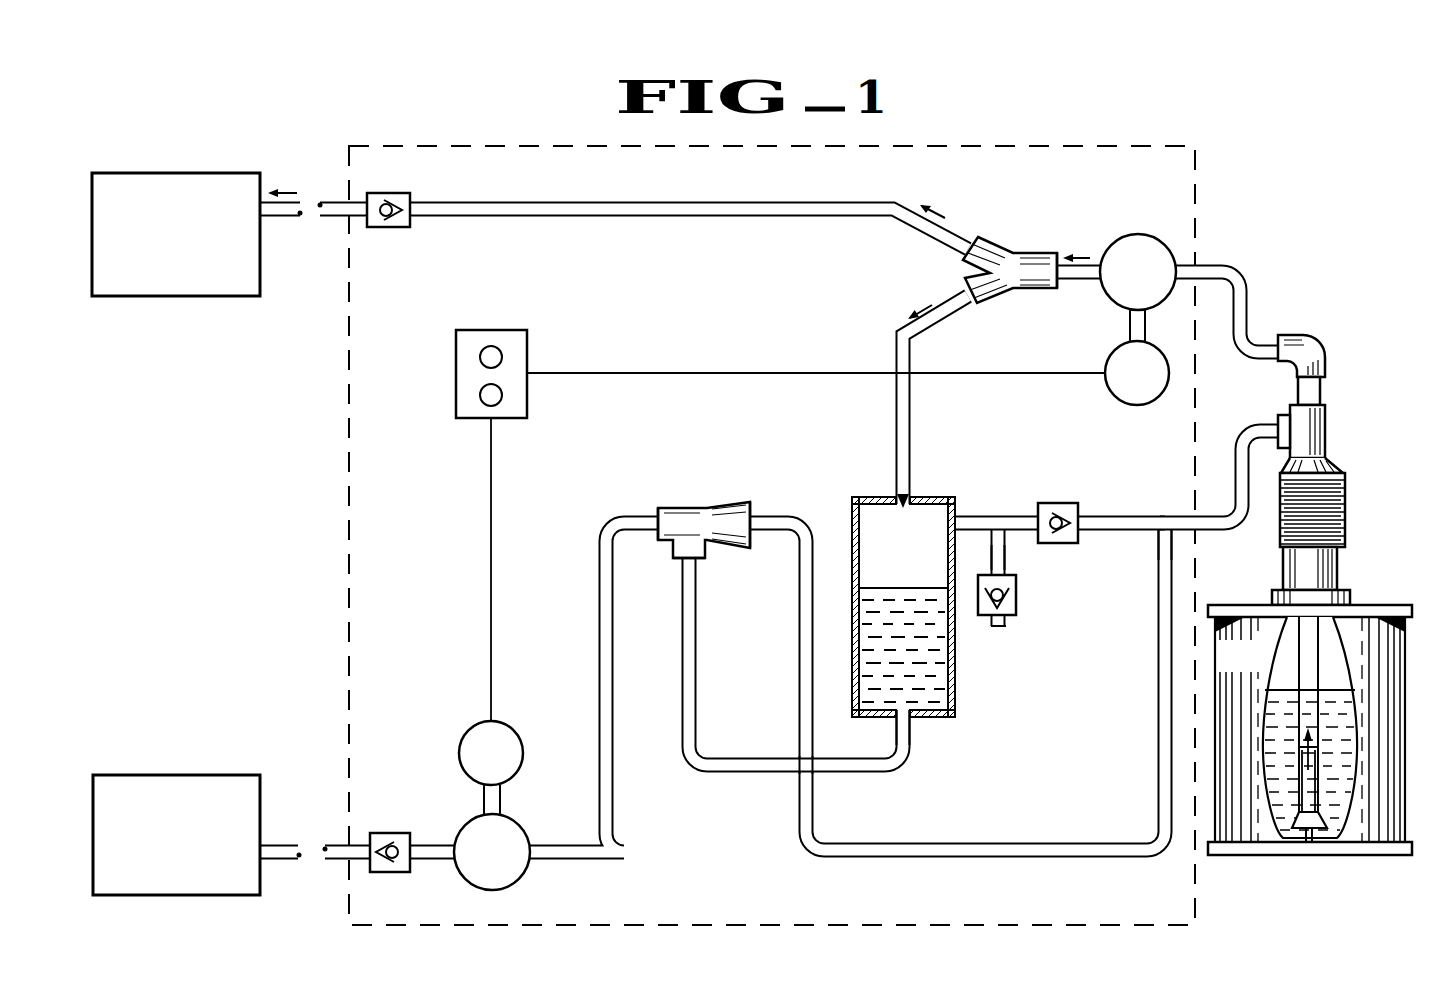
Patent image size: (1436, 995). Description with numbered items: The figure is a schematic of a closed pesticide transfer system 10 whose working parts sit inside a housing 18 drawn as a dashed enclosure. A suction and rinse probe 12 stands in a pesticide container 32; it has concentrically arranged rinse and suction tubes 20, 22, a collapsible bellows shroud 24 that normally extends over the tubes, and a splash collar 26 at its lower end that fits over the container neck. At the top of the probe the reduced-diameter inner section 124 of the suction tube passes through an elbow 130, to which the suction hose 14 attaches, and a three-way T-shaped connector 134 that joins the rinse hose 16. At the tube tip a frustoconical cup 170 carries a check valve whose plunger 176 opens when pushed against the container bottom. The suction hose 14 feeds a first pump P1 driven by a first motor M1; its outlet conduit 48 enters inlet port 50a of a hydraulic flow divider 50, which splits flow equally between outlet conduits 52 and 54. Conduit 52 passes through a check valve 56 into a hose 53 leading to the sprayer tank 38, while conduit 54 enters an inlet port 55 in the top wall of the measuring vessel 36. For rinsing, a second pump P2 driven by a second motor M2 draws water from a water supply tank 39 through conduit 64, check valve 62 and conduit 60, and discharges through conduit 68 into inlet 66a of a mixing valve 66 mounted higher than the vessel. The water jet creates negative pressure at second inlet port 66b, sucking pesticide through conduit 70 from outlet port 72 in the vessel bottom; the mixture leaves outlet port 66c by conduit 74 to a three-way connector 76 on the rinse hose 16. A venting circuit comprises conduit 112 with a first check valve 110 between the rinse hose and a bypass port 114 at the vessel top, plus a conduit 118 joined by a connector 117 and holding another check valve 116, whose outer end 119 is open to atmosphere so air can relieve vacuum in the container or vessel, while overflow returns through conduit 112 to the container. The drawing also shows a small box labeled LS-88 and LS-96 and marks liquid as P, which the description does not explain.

The pesticide transfer system 10 is at (1244, 157).
The suction and rinse probe 12 is at (1336, 470).
The suction hose 14 is at (1247, 278).
The rinse hose 16 is at (1218, 521).
The housing 18 is at (347, 427).
The rinse tube 20 is at (1314, 642).
The suction tube 22 is at (1318, 792).
The collapsible shroud 24 is at (1345, 500).
The splash collar 26 is at (1332, 573).
The pesticide container 32 is at (1258, 670).
The measuring vessel 36 is at (955, 691).
The sprayer tank 38 is at (192, 243).
The water supply tank 39 is at (192, 858).
The conduit 48 is at (1094, 279).
The hydraulic flow divider 50 is at (1023, 262).
The inlet port 50a is at (1060, 280).
The outlet conduit 52 is at (548, 202).
The hose 53 is at (318, 220).
The outlet conduit 54 is at (910, 349).
The inlet port 55 is at (900, 508).
The check valve 56 is at (397, 228).
The conduit 60 is at (437, 861).
The check valve 62 is at (390, 832).
The conduit 64 is at (324, 846).
The mixing valve 66 is at (695, 508).
The inlet 66a is at (657, 520).
The second inlet port 66b is at (686, 559).
The outlet port 66c is at (752, 516).
The conduit 68 is at (599, 688).
The conduit 70 is at (697, 714).
The outlet port 72 is at (906, 722).
The conduit 74 is at (799, 810).
The three-way connector 76 is at (1156, 533).
The first check valve 110 is at (1059, 502).
The conduit 112 is at (1113, 516).
The bypass port 114 is at (956, 516).
The check valve 116 is at (1016, 592).
The connector 117 is at (999, 516).
The conduit 118 is at (1007, 557).
The outer end 119 is at (1007, 623).
The inner section 124 is at (1312, 397).
The elbow 130 is at (1325, 352).
The three-way T-shaped connector 134 is at (1326, 425).
The frustoconical cup 170 is at (1300, 820).
The plunger 176 is at (1310, 846).
The limit switch LS-88 is at (480, 357).
The limit switch LS-96 is at (480, 395).
The first pump P1 is at (1153, 289).
The first motor M1 is at (1154, 390).
The second pump P2 is at (508, 869).
The second motor M2 is at (508, 770).
The fluid P is at (904, 667).